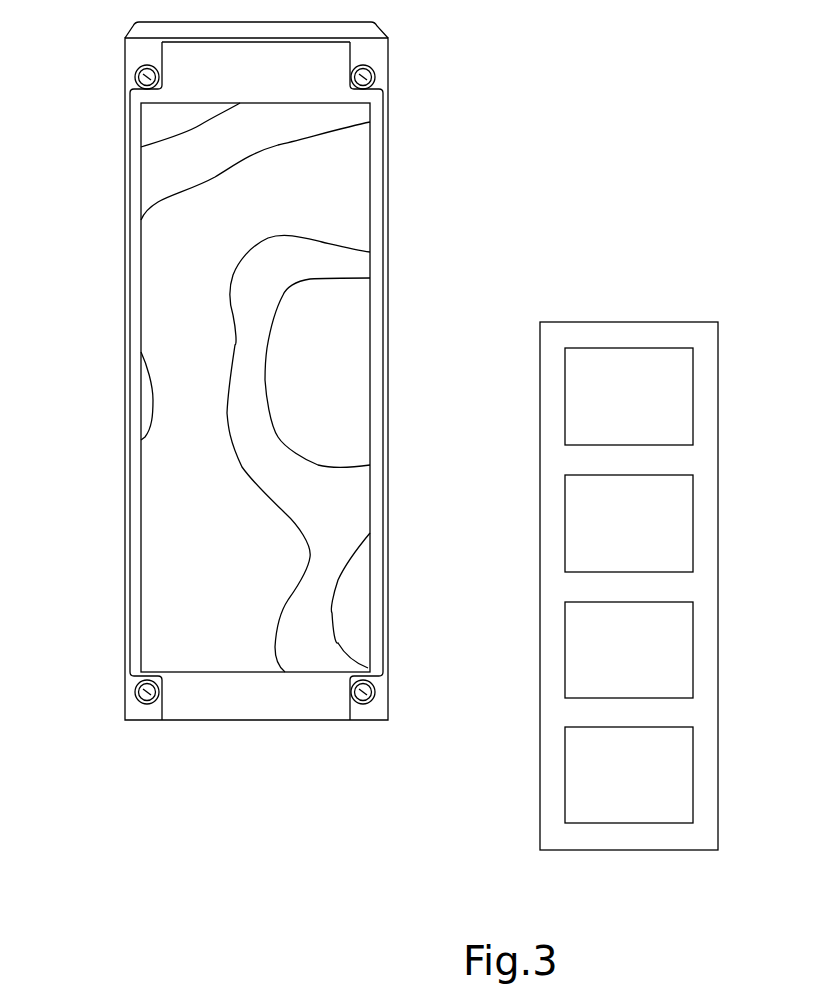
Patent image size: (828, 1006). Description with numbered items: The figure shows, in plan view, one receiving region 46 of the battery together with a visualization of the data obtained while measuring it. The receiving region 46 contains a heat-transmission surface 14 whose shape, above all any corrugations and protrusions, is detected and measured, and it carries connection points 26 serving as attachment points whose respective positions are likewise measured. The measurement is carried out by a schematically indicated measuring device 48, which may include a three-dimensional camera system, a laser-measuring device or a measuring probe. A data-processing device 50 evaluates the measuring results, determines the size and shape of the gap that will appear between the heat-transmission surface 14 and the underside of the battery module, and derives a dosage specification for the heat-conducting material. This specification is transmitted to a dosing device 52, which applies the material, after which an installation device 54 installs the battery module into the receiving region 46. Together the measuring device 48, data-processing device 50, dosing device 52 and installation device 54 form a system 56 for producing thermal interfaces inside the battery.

The heat-transmission surface 14 is at (177, 498).
The connection points 26 is at (147, 77).
The receiving region 46 is at (448, 227).
The measuring device 48 is at (648, 411).
The data-processing device 50 is at (648, 538).
The dosing device 52 is at (648, 664).
The installation device 54 is at (648, 789).
The system 56 is at (643, 322).